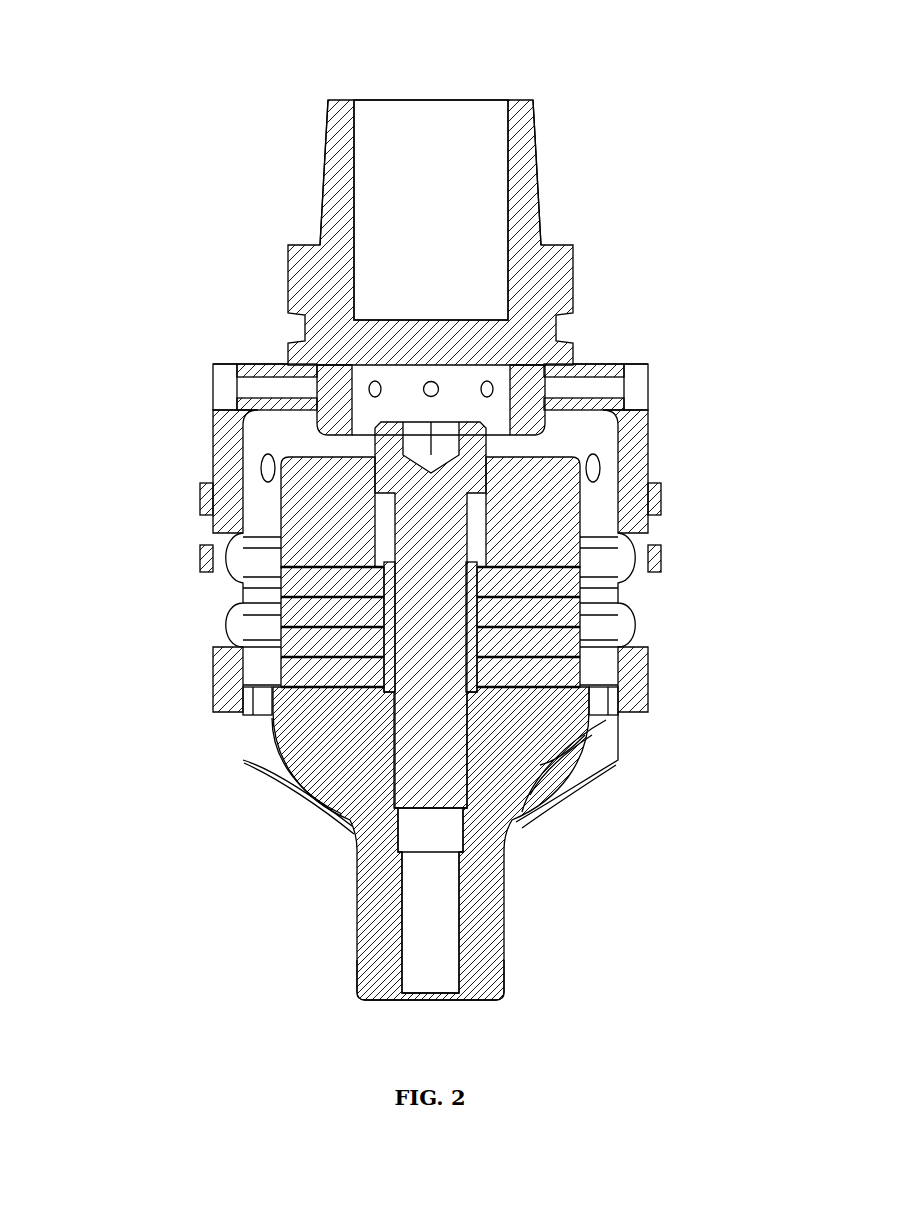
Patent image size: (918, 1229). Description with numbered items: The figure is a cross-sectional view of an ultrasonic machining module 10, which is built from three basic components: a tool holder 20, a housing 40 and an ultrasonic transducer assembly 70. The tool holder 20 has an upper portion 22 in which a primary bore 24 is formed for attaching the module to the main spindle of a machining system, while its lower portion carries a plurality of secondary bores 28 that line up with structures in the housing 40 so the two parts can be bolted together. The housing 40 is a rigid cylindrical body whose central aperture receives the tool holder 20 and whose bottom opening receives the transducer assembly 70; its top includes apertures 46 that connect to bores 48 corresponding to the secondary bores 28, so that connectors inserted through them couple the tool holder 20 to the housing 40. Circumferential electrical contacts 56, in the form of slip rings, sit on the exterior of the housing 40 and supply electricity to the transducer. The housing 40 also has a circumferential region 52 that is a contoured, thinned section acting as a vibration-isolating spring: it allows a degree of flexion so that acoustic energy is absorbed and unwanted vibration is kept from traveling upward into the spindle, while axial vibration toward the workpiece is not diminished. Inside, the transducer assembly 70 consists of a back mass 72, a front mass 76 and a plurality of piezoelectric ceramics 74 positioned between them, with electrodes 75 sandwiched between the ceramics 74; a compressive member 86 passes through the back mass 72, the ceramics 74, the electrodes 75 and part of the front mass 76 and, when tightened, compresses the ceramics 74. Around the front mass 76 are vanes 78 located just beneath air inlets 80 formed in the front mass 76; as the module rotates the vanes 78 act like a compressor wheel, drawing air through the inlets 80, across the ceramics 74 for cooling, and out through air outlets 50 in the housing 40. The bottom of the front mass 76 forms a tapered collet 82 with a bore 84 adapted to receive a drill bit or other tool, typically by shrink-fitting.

The ultrasonic machining module 10 is at (161, 40).
The tool holder 20 is at (548, 152).
The upper portion 22 is at (323, 190).
The primary bore 24 is at (353, 100).
The secondary bores 28 is at (342, 380).
The housing 40 is at (656, 676).
The apertures 46 is at (214, 392).
The bores 48 is at (250, 383).
The air outlets 50 is at (214, 455).
The circumferential region 52 is at (205, 601).
The circumferential electrical contacts 56 is at (200, 500).
The ultrasonic transducer assembly 70 is at (513, 930).
The back mass 72 is at (600, 525).
The piezoelectric ceramics 74 is at (282, 650).
The electrodes 75 is at (282, 565).
The front mass 76 is at (602, 772).
The vanes 78 is at (282, 792).
The air inlets 80 is at (251, 716).
The tapered collet 82 is at (504, 984).
The bore 84 is at (462, 995).
The compressive member 86 is at (415, 813).